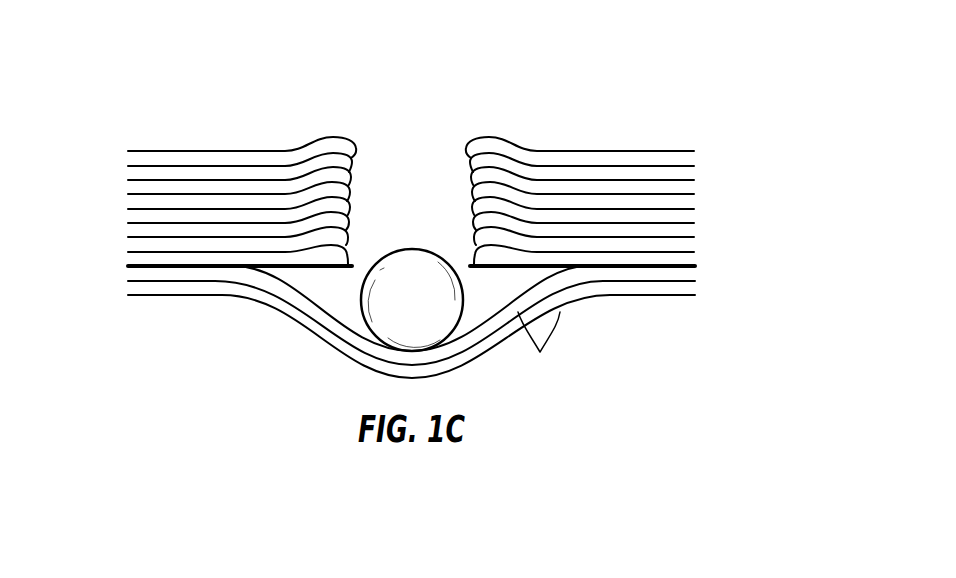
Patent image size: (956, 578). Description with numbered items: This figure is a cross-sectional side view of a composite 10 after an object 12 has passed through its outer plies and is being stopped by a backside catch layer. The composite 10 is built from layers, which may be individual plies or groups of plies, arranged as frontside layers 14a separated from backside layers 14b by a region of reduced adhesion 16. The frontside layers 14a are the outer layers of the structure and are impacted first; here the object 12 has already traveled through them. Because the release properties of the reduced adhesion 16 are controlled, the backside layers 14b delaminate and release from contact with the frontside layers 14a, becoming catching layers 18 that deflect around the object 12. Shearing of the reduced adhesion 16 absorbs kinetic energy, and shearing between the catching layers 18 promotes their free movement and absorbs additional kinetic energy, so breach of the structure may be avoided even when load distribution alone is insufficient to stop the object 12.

The composite 10 is at (702, 74).
The object 12 is at (411, 249).
The frontside layers 14a is at (710, 265).
The backside layers 14b is at (708, 302).
The region of reduced adhesion 16 is at (122, 266).
The catching layers 18 is at (539, 351).